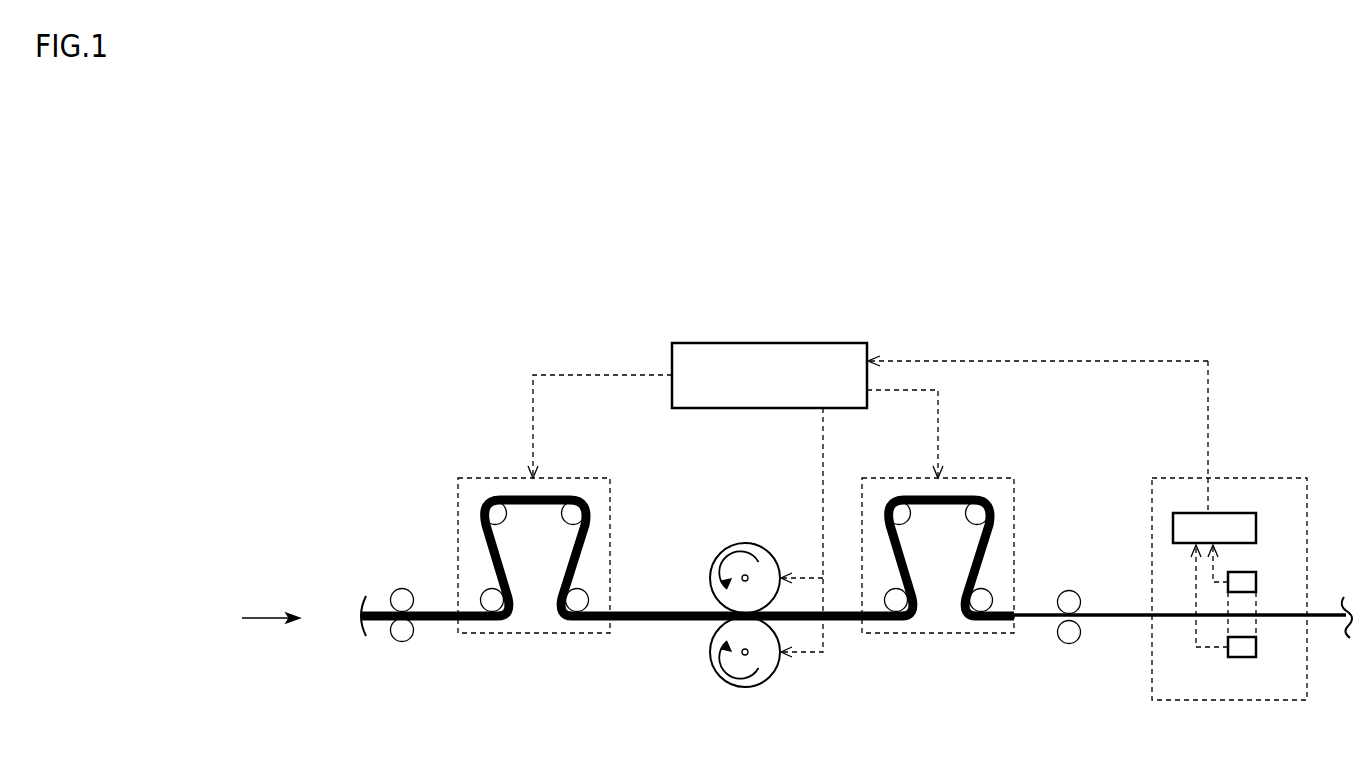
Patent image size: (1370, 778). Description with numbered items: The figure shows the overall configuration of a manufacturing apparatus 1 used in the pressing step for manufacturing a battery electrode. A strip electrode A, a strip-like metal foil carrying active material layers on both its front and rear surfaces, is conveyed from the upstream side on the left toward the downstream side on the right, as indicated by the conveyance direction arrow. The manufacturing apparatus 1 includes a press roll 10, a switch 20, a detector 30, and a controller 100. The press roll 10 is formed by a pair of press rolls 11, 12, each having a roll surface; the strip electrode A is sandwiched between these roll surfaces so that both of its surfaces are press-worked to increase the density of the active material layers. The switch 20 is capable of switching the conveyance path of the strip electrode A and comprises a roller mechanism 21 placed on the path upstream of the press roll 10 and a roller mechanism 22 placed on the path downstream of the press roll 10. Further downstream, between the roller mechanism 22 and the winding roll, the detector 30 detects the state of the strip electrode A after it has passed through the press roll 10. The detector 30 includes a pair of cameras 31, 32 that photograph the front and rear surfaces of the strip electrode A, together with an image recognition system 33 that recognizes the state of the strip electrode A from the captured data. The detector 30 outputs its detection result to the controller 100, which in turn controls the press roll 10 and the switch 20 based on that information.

The manufacturing apparatus 1 is at (458, 327).
The controller 100 is at (805, 343).
The press roll 10 is at (753, 616).
The press roll 11 is at (742, 543).
The press roll 12 is at (742, 687).
The switch 20 is at (777, 542).
The roller mechanism 21 is at (600, 478).
The roller mechanism 22 is at (979, 542).
The detector 30 is at (1237, 478).
The camera 31 is at (1243, 572).
The camera 32 is at (1243, 657).
The image recognition system 33 is at (1238, 513).
The strip electrode A is at (671, 622).